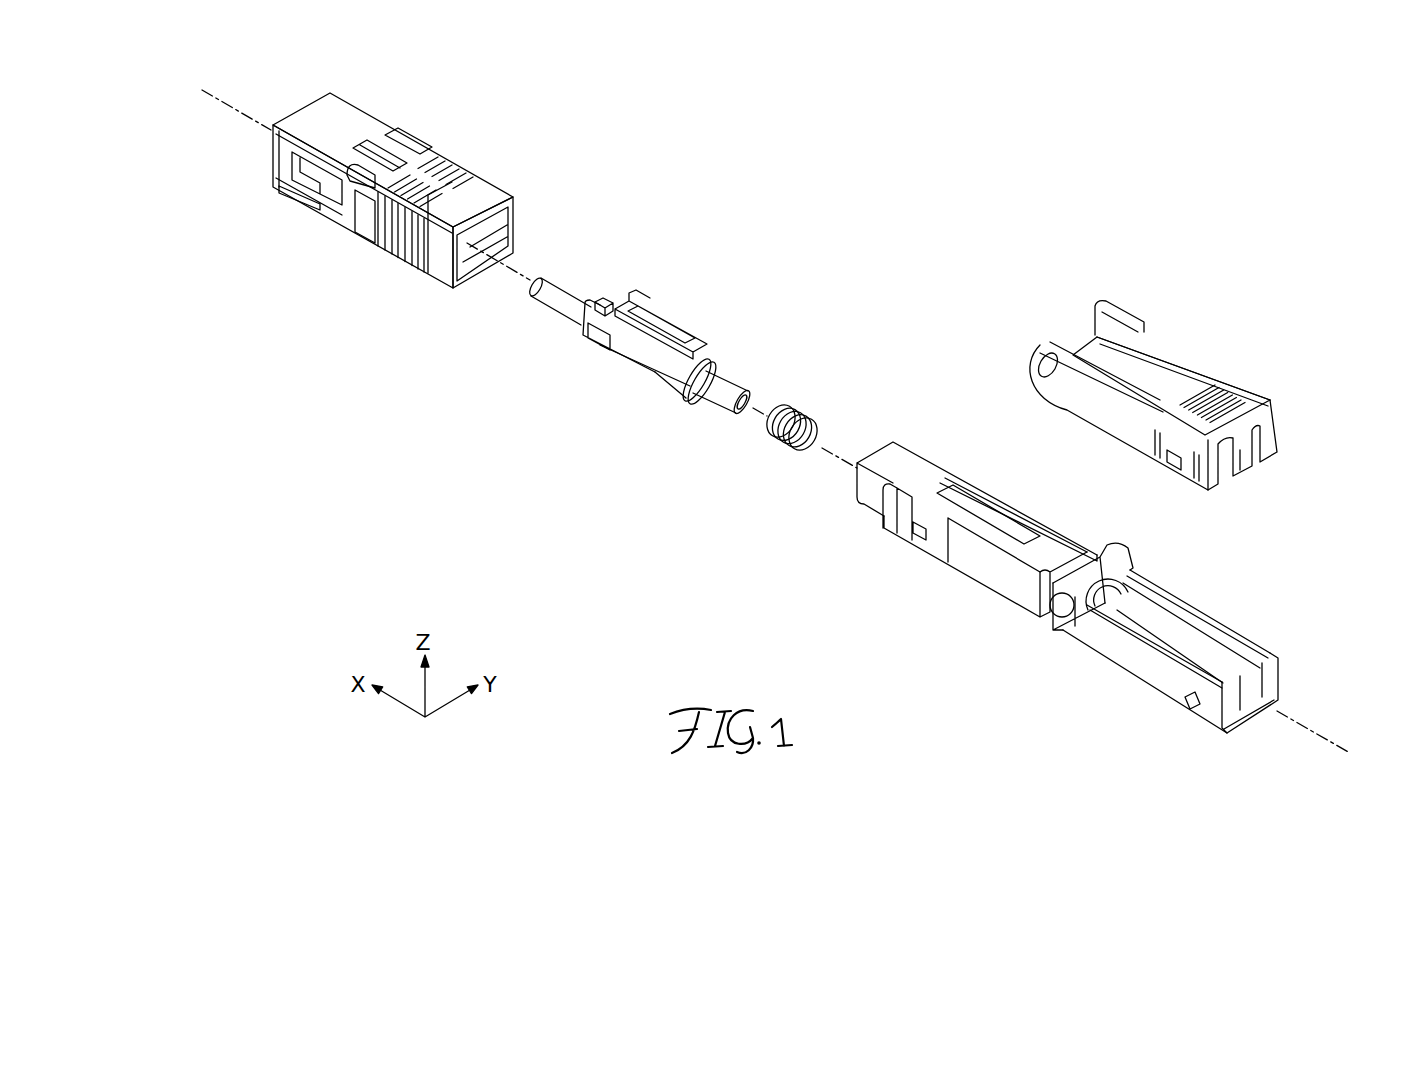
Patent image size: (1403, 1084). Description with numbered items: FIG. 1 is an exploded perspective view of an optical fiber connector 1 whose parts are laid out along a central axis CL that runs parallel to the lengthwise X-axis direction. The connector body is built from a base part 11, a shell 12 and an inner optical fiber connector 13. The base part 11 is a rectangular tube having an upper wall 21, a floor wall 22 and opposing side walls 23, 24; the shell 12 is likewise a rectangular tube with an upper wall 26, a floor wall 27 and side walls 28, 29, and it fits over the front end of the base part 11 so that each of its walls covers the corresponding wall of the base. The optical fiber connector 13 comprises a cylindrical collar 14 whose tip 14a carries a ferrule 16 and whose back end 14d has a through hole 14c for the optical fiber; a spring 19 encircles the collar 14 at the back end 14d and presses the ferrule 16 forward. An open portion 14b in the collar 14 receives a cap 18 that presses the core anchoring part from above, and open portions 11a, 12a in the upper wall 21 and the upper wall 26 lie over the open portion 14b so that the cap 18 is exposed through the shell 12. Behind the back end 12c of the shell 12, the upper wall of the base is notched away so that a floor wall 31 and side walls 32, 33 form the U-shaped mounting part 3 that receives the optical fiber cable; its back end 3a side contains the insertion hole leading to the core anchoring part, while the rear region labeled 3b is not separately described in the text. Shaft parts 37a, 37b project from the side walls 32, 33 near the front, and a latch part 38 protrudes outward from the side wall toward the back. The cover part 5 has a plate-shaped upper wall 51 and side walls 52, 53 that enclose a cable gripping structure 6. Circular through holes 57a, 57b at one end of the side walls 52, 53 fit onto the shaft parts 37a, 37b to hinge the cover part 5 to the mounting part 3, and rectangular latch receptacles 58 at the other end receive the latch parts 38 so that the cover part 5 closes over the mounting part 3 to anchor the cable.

The central axis CL is at (255, 117).
The optical fiber connector 1 is at (1137, 185).
The mounting part 3 is at (1175, 630).
The back end 3a is at (1056, 625).
The rear end portion 3b is at (1280, 667).
The cover part 5 is at (1151, 384).
The cable gripping structure 6 is at (1270, 475).
The base part 11 is at (1063, 532).
The open portion 11a is at (968, 495).
The shell 12 is at (426, 198).
The open portion 12a is at (386, 135).
The back end 12c is at (519, 207).
The optical fiber connector 13 is at (675, 378).
The collar 14 is at (657, 368).
The tip 14a is at (596, 300).
The open portion 14b is at (633, 333).
The through hole 14c is at (745, 392).
The back end 14d is at (731, 417).
The ferrule 16 is at (558, 298).
The cap 18 is at (653, 308).
The spring 19 is at (795, 450).
The upper wall 21 is at (900, 460).
The floor wall 22 is at (997, 597).
The side wall 23 is at (965, 560).
The side wall 24 is at (1060, 533).
The upper wall 26 is at (342, 105).
The floor wall 27 is at (433, 280).
The side wall 28 is at (346, 218).
The side wall 29 is at (500, 187).
The floor wall 31 is at (1133, 680).
The side wall 32 is at (1108, 653).
The side wall 33 is at (1215, 618).
The shaft part 37a is at (1066, 630).
The shaft part 37b is at (1130, 562).
The latch part 38 is at (1190, 706).
The upper wall 51 is at (1200, 370).
The side wall 52 is at (1095, 412).
The side wall 53 is at (1160, 330).
The through hole 57a is at (1037, 365).
The through hole 57b is at (1096, 305).
The latch receptacle 58 is at (1174, 463).